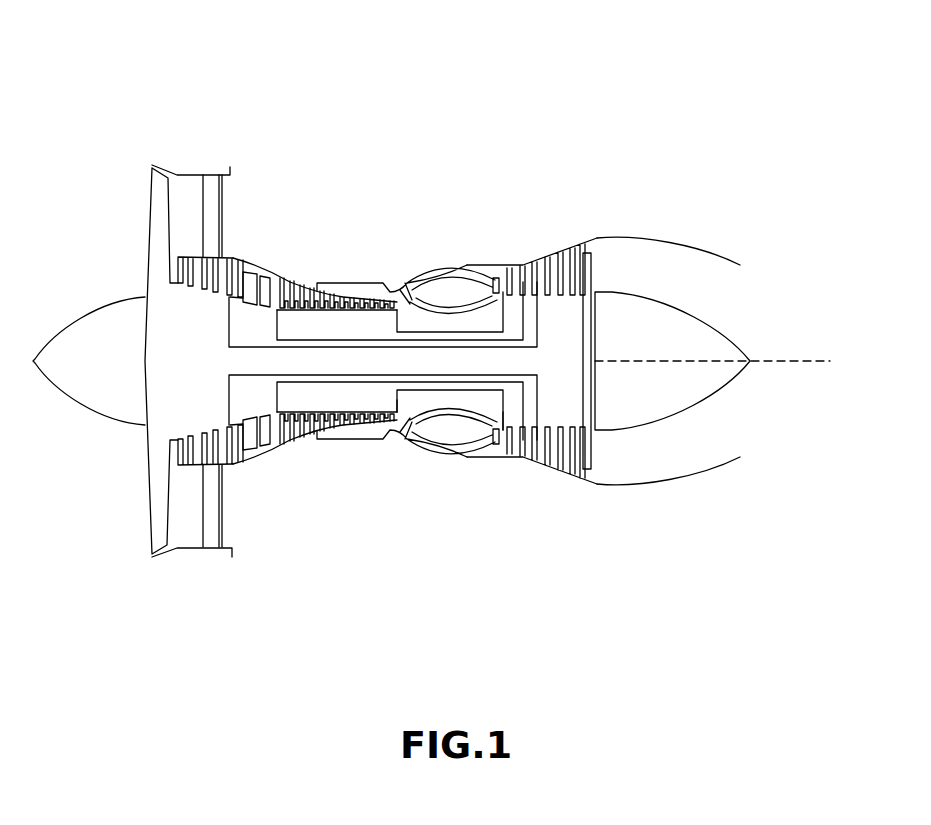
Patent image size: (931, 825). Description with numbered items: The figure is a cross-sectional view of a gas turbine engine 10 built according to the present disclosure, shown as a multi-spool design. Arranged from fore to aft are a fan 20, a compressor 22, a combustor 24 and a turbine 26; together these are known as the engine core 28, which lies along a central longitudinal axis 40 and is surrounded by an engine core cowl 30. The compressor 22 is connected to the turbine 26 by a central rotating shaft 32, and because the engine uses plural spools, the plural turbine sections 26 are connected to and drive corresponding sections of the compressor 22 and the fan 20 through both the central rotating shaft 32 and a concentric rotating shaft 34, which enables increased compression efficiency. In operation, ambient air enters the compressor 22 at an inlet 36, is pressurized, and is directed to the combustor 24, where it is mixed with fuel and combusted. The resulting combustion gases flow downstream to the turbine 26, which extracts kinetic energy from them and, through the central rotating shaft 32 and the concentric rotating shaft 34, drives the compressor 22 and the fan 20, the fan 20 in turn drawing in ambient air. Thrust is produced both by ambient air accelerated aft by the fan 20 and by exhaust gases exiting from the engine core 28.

The gas turbine engine 10 is at (245, 108).
The fan 20 is at (157, 248).
The compressor 22 is at (303, 292).
The combustor 24 is at (447, 297).
The turbine 26 is at (545, 258).
The engine core 28 is at (525, 470).
The engine core cowl 30 is at (320, 432).
The central rotating shaft 32 is at (243, 372).
The concentric rotating shaft 34 is at (450, 390).
The inlet 36 is at (178, 453).
The central longitudinal axis 40 is at (777, 361).